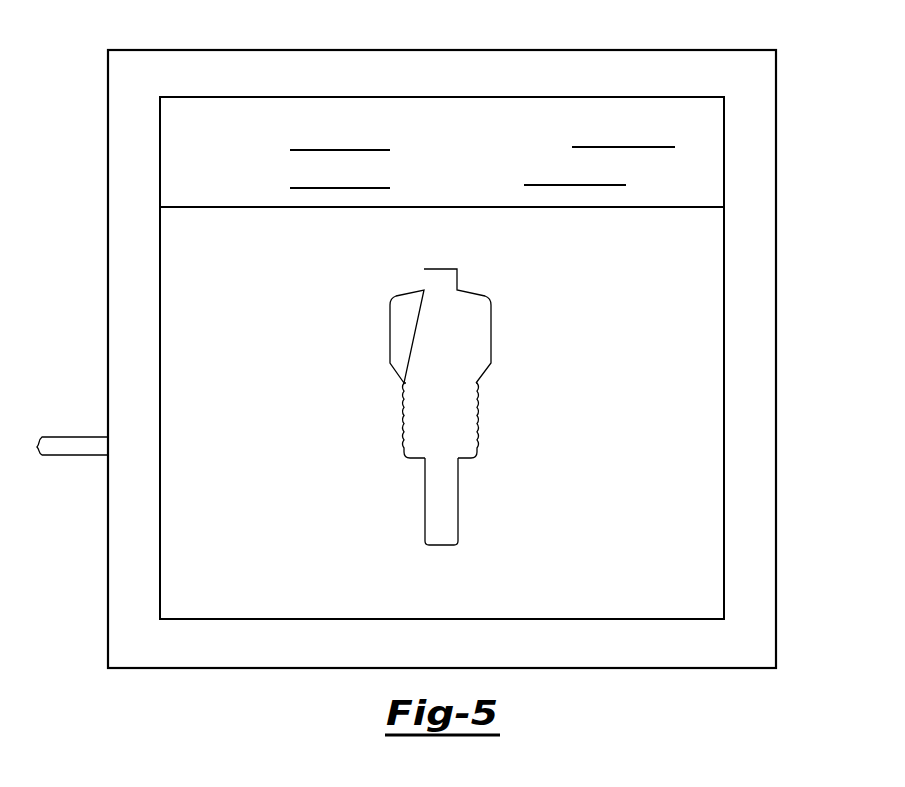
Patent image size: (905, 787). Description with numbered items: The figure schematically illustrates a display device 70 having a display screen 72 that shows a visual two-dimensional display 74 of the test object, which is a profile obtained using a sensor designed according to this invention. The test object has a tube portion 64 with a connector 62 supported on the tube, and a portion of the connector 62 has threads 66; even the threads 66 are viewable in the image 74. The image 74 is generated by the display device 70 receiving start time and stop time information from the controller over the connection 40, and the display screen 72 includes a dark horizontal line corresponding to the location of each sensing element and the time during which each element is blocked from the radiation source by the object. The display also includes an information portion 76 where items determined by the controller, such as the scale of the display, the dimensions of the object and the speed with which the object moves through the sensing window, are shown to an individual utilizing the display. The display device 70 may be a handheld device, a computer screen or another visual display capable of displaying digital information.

The connection 40 is at (75, 446).
The connector 62 is at (400, 318).
The tube portion 64 is at (445, 497).
The threads 66 is at (404, 418).
The display device 70 is at (753, 118).
The display screen 72 is at (695, 230).
The two-dimensional display 74 is at (471, 407).
The information portion 76 is at (362, 131).